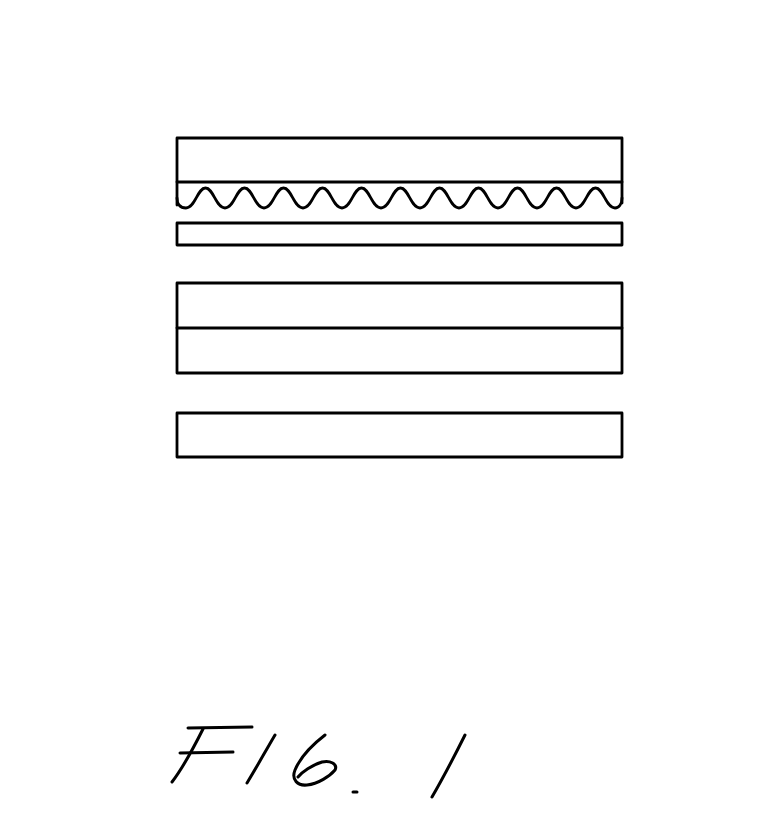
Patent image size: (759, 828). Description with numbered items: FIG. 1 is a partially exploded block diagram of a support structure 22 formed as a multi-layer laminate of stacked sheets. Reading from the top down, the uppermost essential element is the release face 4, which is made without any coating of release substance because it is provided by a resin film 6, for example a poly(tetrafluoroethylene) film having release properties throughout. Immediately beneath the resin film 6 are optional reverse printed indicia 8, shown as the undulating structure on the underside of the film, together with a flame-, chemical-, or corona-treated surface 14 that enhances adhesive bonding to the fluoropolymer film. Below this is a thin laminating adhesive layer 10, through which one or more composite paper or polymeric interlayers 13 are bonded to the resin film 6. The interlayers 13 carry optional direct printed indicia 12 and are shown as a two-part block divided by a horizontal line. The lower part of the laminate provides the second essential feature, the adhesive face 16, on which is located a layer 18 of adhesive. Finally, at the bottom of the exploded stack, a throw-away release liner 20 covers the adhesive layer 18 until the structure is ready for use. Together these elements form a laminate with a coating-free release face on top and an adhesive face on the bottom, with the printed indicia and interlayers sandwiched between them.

The display assembly 22 is at (108, 83).
The release face 4 is at (475, 138).
The resin film 6 is at (177, 160).
The reverse printed indicia 8 is at (622, 183).
The treated surface 14 is at (612, 201).
The laminating adhesive layer 10 is at (177, 233).
The direct printed indicia 12 is at (603, 283).
The interlayers 13 is at (177, 307).
The adhesive face 16 is at (594, 329).
The layer of adhesive 18 is at (177, 360).
The release liner 20 is at (622, 440).